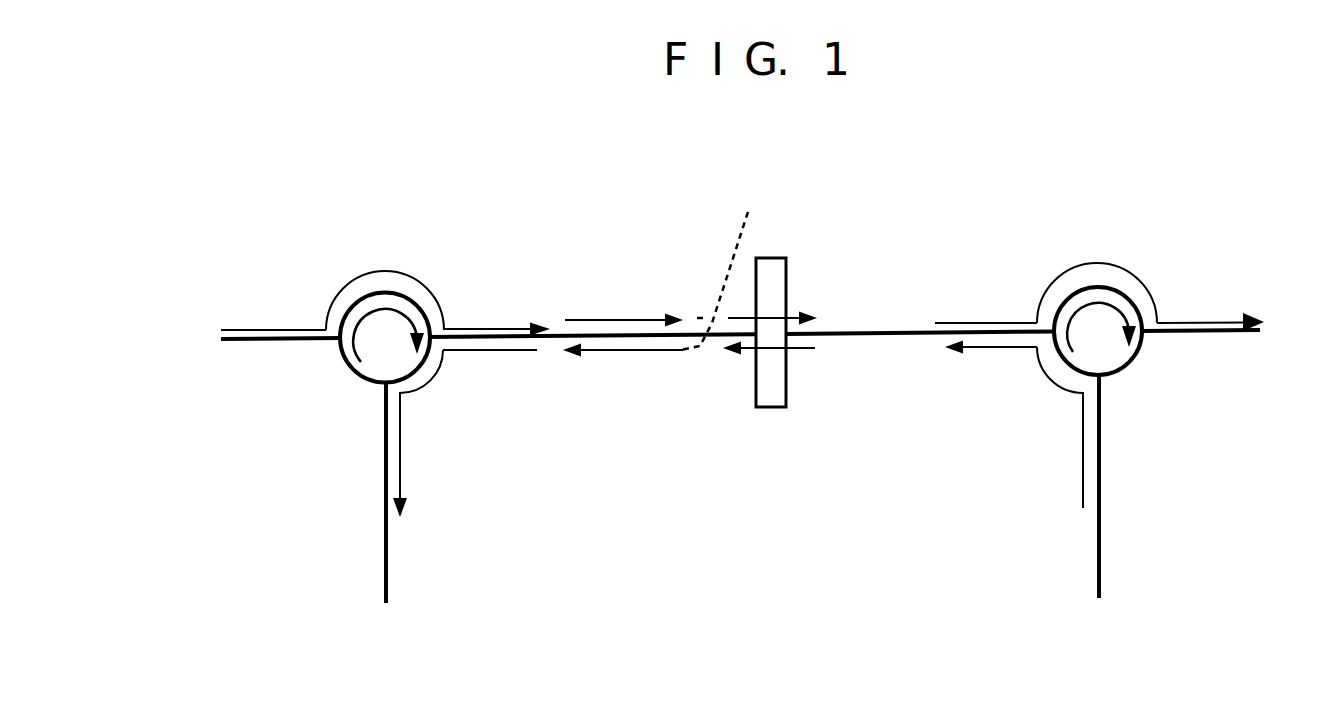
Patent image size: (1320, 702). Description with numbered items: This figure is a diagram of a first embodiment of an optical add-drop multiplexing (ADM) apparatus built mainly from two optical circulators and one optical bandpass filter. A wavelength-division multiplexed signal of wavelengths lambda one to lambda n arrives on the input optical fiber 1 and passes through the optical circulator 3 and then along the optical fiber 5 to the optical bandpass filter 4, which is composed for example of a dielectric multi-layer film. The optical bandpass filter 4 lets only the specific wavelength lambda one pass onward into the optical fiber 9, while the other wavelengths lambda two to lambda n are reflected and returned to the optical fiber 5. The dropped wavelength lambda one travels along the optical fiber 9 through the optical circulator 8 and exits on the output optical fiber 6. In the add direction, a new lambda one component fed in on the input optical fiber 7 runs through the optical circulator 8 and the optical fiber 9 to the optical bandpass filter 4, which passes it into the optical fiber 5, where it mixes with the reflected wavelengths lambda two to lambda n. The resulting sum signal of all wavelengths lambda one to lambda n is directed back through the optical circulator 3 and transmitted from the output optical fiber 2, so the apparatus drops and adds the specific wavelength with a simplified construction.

The input optical fiber 1 is at (282, 342).
The output optical fiber 2 is at (389, 555).
The optical circulator 3 is at (363, 382).
The optical bandpass filter 4 is at (772, 408).
The optical fiber 5 is at (548, 338).
The output optical fiber 6 is at (1212, 333).
The input optical fiber 7 is at (1098, 556).
The optical circulator 8 is at (1122, 368).
The optical fiber 9 is at (867, 335).